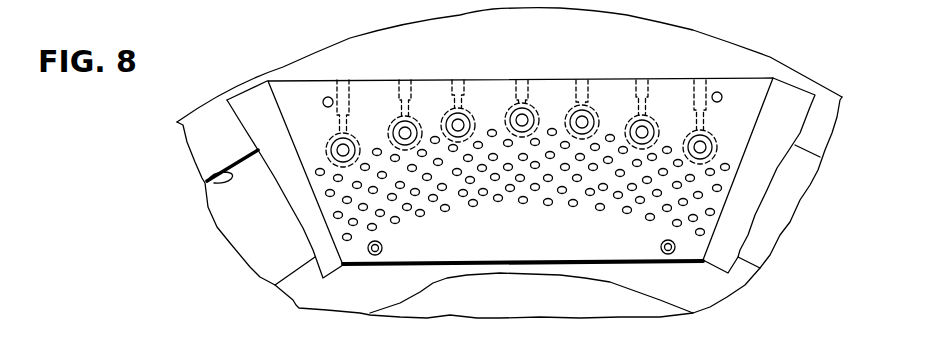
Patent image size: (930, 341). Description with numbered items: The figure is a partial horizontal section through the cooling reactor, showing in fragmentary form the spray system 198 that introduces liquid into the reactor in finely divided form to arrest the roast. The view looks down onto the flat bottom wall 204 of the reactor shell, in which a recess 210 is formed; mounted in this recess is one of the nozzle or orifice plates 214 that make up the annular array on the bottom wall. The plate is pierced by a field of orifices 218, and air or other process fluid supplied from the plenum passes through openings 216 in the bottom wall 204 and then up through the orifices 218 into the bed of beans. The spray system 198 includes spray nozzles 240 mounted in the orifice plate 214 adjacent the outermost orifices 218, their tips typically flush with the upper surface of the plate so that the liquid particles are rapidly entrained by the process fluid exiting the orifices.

The flat bottom wall 204 is at (407, 24).
The nozzle or orifice plate 214 is at (625, 78).
The opening 216 is at (203, 182).
The spray system 198 is at (457, 100).
The spray nozzle 240 is at (515, 110).
The orifice 218 is at (522, 206).
The recess 210 is at (440, 283).